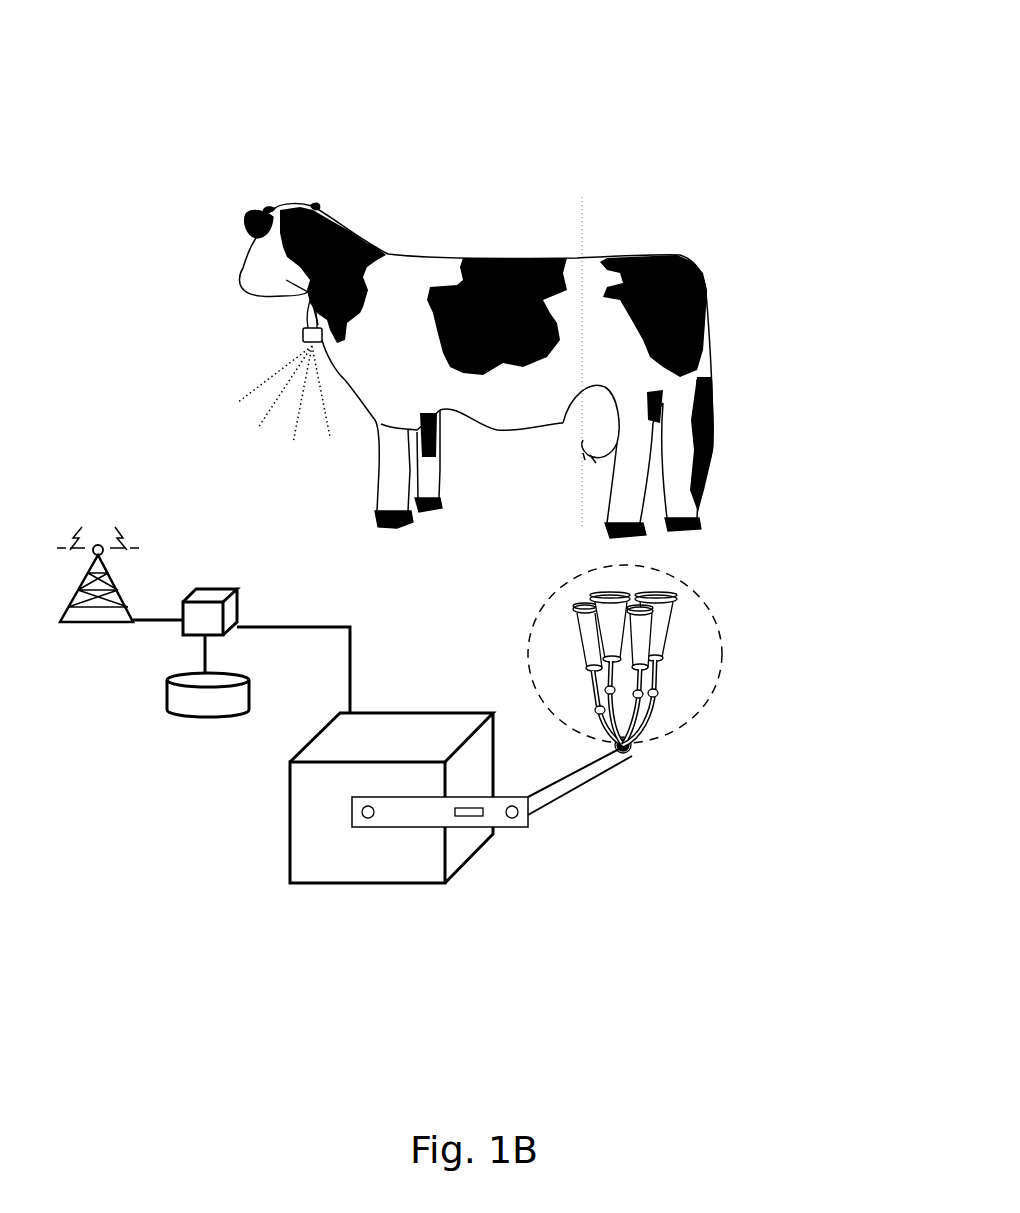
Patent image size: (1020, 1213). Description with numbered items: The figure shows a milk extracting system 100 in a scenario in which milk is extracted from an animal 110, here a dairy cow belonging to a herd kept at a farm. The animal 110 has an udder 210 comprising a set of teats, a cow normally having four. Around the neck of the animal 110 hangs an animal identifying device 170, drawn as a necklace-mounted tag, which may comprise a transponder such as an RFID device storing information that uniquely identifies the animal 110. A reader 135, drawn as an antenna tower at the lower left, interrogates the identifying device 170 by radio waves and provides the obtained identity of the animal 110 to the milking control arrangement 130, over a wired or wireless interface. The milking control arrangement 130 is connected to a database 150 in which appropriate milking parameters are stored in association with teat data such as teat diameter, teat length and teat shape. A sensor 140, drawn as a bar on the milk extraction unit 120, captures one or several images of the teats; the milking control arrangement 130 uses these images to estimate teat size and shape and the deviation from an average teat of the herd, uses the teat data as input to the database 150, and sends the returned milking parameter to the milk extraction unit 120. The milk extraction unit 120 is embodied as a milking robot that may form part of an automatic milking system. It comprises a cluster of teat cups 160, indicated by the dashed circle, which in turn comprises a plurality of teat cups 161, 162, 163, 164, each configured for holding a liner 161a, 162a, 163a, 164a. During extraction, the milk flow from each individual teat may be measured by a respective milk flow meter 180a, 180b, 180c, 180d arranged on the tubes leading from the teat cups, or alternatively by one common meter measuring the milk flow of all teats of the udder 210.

The milk extracting system 100 is at (826, 68).
The animal 110 is at (523, 257).
The udder 210 is at (592, 413).
The animal identifying device 170 is at (310, 345).
The reader 135 is at (120, 583).
The milking control arrangement 130 is at (220, 590).
The database 150 is at (183, 696).
The milk extraction unit 120 is at (333, 733).
The sensor 140 is at (470, 813).
The cluster of teat cups 160 is at (722, 685).
The teat cup 161 is at (590, 600).
The liner 161a is at (612, 622).
The teat cup 162 is at (590, 635).
The liner 162a is at (588, 605).
The teat cup 163 is at (660, 610).
The liner 163a is at (658, 602).
The teat cup 164 is at (640, 640).
The liner 164a is at (635, 605).
The milk flow meter 180a is at (657, 690).
The milk flow meter 180b is at (647, 710).
The milk flow meter 180c is at (598, 710).
The milk flow meter 180d is at (595, 675).